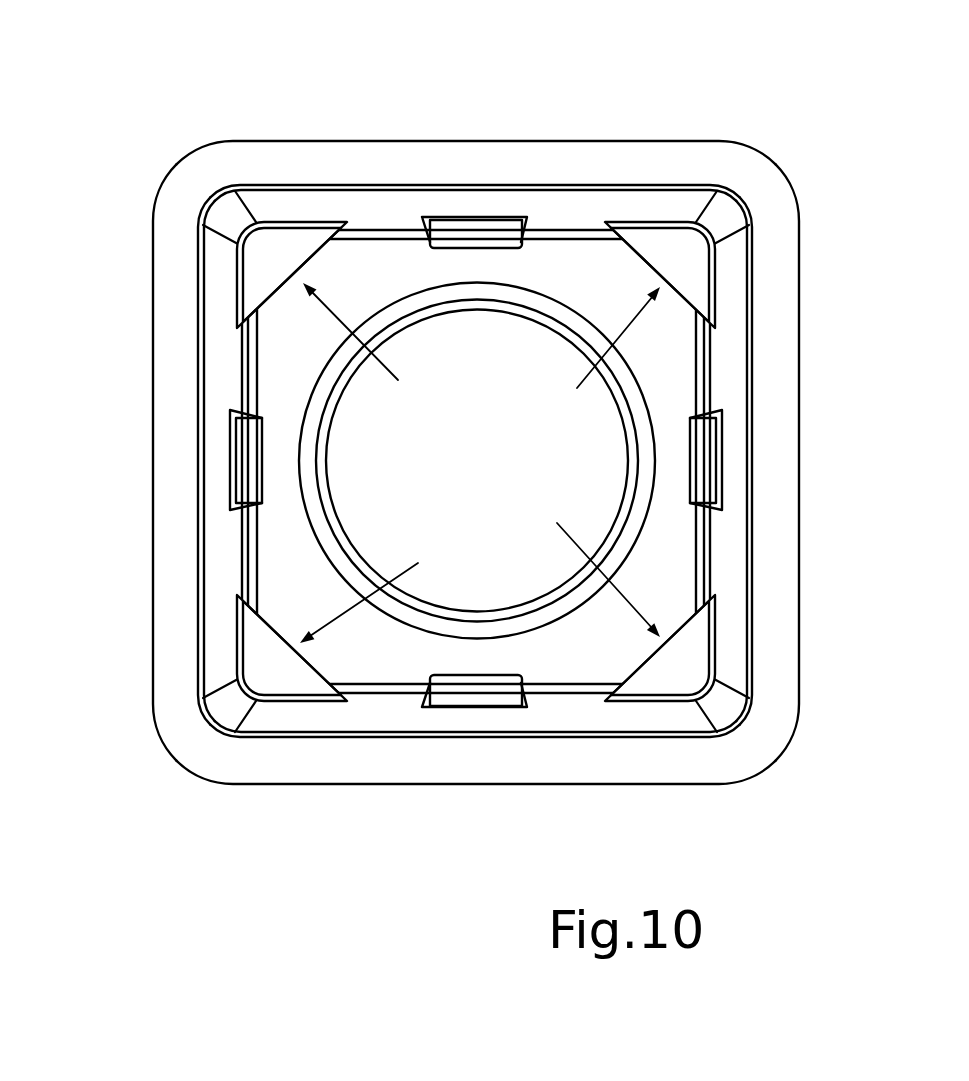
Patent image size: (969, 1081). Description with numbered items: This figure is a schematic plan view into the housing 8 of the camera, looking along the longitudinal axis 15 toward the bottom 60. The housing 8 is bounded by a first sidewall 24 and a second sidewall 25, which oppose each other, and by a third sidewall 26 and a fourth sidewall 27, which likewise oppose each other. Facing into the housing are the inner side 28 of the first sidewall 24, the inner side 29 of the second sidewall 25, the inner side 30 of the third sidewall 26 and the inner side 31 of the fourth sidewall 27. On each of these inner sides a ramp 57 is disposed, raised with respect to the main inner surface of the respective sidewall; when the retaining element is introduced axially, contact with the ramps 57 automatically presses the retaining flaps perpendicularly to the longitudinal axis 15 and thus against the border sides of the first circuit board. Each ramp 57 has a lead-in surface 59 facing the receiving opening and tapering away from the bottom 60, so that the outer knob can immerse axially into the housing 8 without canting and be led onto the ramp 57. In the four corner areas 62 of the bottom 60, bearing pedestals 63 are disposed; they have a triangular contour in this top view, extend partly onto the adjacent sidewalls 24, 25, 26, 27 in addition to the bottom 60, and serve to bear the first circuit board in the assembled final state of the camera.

The housing 8 is at (300, 92).
The longitudinal axis 15 is at (476, 460).
The first sidewall 24 is at (785, 562).
The second sidewall 25 is at (168, 563).
The third sidewall 26 is at (324, 770).
The fourth sidewall 27 is at (427, 153).
The inner side of the first sidewall 28 is at (728, 583).
The inner side of the second sidewall 29 is at (227, 583).
The inner side of the third sidewall 30 is at (581, 718).
The inner side of the fourth sidewall 31 is at (573, 213).
The ramp 57 is at (493, 238).
The lead-in surface 59 is at (478, 208).
The bottom 60 is at (387, 658).
The corner areas 62 is at (480, 463).
The bearing pedestals 63 is at (290, 234).